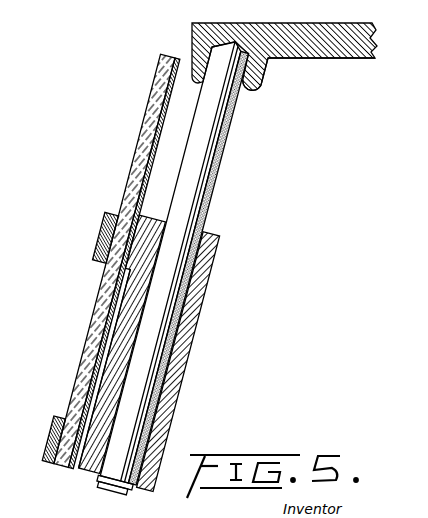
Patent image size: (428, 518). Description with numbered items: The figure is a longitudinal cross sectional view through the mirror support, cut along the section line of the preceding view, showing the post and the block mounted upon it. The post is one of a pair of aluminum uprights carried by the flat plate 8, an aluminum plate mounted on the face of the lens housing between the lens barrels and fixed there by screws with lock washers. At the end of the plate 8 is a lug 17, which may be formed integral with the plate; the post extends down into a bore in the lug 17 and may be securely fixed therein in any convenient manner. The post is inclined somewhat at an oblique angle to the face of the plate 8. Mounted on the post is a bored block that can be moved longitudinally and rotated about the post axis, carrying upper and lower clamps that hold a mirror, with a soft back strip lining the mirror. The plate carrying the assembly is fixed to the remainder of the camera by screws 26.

The flat plate 8 is at (354, 61).
The lug 17 is at (258, 88).
The screws 26 is at (284, 46).